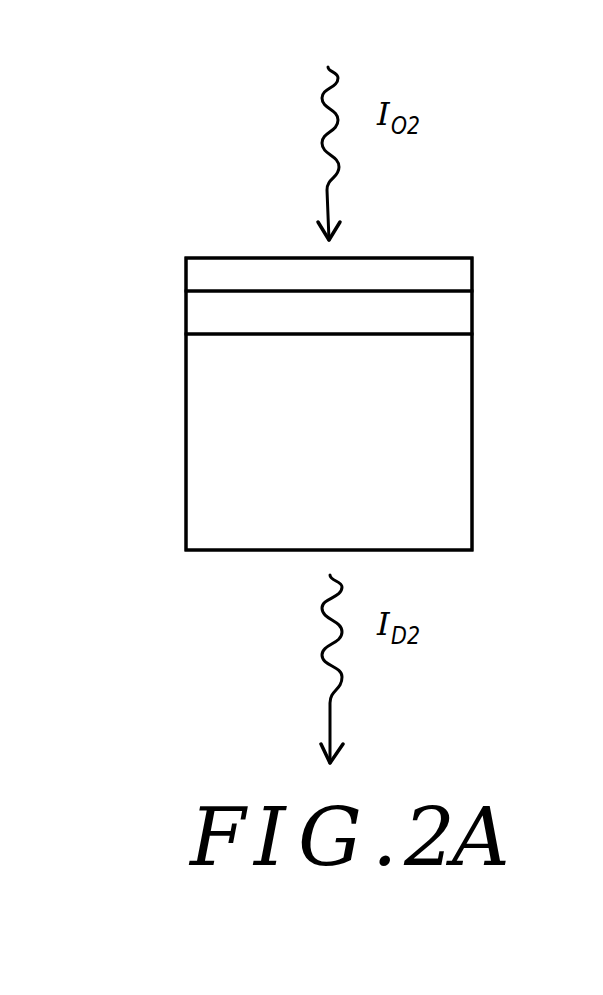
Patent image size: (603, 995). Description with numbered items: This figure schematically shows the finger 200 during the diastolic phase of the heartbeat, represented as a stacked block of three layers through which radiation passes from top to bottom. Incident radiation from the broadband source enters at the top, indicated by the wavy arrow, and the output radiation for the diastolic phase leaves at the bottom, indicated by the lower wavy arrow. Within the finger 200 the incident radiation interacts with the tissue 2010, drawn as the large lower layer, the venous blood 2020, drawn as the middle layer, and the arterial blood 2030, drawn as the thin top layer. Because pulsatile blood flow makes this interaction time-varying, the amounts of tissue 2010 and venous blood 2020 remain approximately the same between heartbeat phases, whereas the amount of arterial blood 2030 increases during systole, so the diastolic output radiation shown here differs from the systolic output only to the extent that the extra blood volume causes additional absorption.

The finger 200 is at (186, 435).
The tissue 2010 is at (473, 447).
The venous blood 2020 is at (472, 316).
The arterial blood 2030 is at (472, 270).